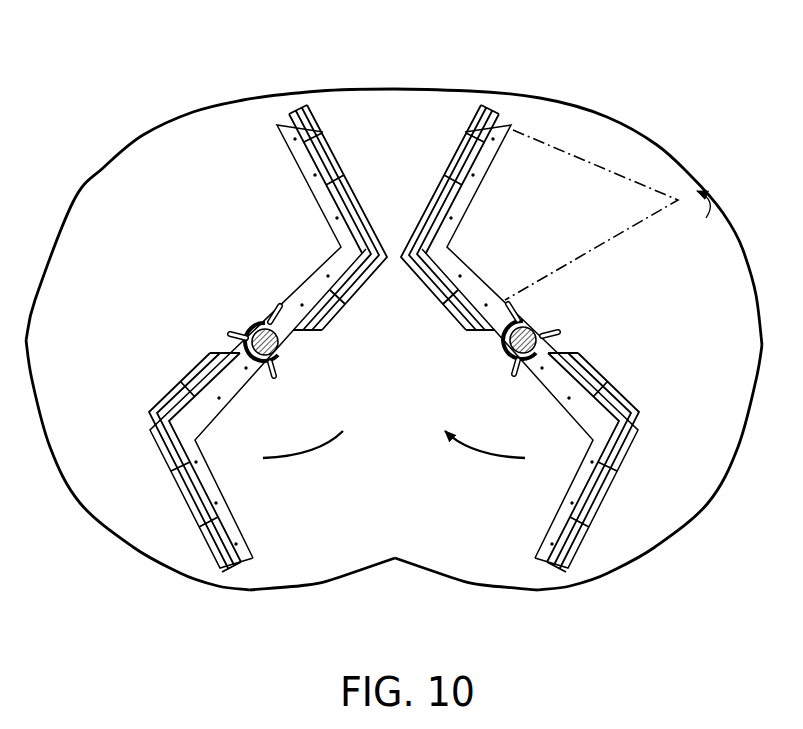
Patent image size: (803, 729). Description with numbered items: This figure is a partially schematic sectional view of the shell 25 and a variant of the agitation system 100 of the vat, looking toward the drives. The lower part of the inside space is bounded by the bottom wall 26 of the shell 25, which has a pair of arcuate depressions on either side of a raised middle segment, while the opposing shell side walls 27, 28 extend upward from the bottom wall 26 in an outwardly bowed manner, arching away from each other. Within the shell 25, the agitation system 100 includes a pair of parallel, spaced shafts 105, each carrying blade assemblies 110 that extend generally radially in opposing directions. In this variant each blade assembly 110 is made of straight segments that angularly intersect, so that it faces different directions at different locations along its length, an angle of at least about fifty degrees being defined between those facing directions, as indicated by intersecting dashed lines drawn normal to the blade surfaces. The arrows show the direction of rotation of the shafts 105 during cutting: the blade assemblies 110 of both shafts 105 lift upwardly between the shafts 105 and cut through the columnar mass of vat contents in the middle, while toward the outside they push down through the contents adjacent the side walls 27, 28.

The shell 25 is at (394, 84).
The bottom wall 26 is at (371, 566).
The shell side wall 27 is at (27, 362).
The shell side wall 28 is at (757, 382).
The agitation system 100 is at (425, 338).
The shaft 105 is at (263, 322).
The blade assembly 110 is at (428, 201).